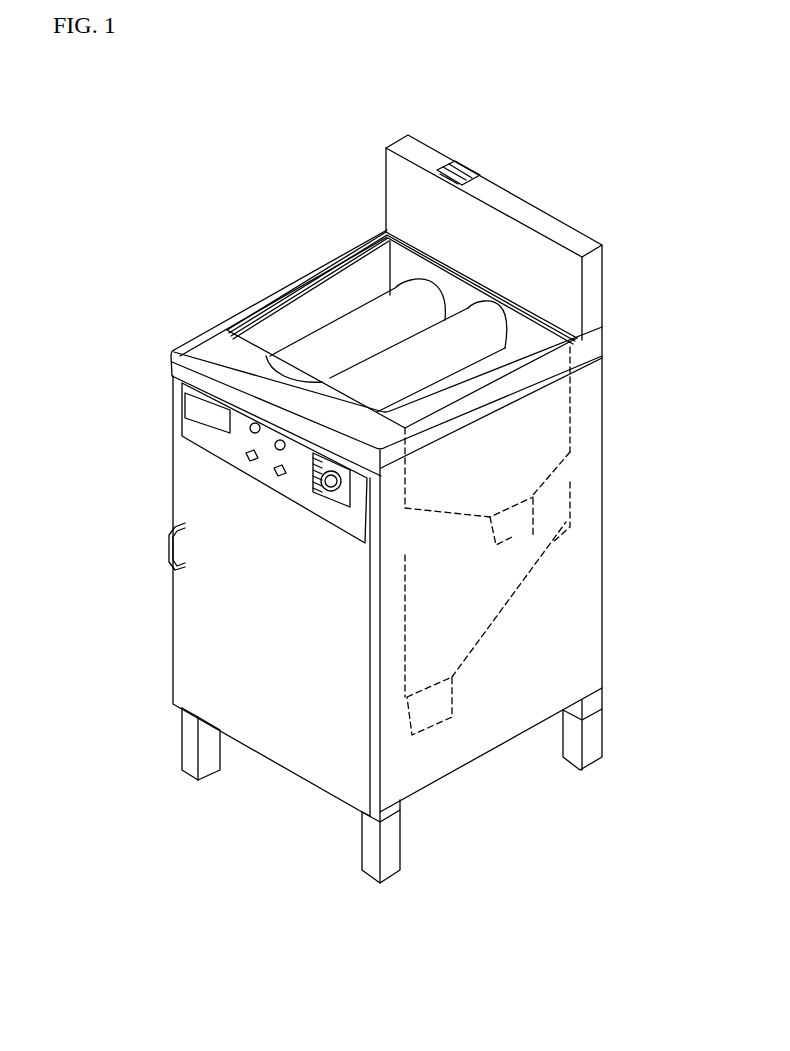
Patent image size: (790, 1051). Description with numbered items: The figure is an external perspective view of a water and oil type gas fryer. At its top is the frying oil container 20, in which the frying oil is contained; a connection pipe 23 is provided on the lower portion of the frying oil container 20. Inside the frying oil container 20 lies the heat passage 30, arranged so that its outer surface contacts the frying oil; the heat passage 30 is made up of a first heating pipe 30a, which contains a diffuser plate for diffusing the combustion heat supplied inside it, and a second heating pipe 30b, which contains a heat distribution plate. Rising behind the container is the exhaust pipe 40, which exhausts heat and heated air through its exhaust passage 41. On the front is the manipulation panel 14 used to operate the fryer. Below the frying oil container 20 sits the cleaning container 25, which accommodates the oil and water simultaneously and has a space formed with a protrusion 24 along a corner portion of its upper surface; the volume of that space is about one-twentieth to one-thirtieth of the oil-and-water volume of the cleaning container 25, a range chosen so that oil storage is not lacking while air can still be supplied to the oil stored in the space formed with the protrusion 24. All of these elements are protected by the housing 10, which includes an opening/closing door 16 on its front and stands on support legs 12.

The housing 10 is at (582, 598).
The support legs 12 is at (602, 713).
The manipulation panel 14 is at (185, 420).
The opening/closing door 16 is at (185, 605).
The frying oil container 20 is at (557, 409).
The connection pipe 23 is at (533, 518).
The protrusion 24 is at (410, 555).
The cleaning container 25 is at (538, 553).
The heat passage 30 is at (334, 265).
The first heating pipe 30a is at (442, 357).
The second heating pipe 30b is at (328, 350).
The exhaust pipe 40 is at (593, 290).
The exhaust passage 41 is at (446, 172).